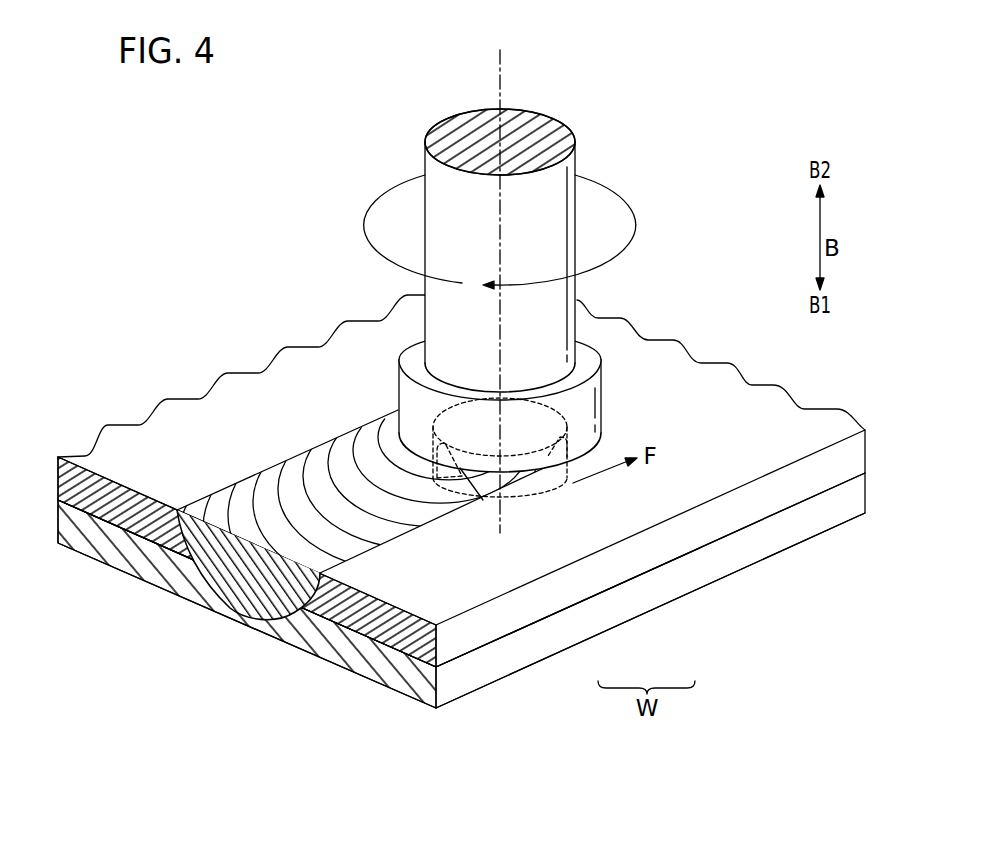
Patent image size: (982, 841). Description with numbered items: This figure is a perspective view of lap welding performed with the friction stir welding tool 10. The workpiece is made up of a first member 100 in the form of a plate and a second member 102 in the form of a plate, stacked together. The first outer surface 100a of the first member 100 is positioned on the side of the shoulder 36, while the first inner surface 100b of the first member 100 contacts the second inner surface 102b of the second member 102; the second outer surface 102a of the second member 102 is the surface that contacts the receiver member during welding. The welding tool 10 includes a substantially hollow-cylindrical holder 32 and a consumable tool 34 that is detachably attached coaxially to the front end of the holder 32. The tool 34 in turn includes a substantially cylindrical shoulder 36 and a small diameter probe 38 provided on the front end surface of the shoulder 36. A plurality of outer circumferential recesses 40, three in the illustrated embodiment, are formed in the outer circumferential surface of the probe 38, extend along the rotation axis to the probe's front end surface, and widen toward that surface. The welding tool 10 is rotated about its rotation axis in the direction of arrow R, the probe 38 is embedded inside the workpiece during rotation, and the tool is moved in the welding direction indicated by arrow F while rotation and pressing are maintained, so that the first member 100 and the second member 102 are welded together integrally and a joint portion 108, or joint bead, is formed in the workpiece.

The welding tool 10 is at (509, 295).
The holder 32 is at (435, 313).
The tool 34 is at (607, 341).
The shoulder 36 is at (406, 396).
The probe 38 is at (535, 495).
The outer circumferential recess 40 is at (448, 474).
The first member 100 is at (608, 568).
The first outer surface 100a is at (777, 415).
The first inner surface 100b is at (725, 538).
The second member 102 is at (658, 592).
The second outer surface 102a is at (815, 540).
The second inner surface 102b is at (702, 547).
The joint portion 108 is at (245, 598).